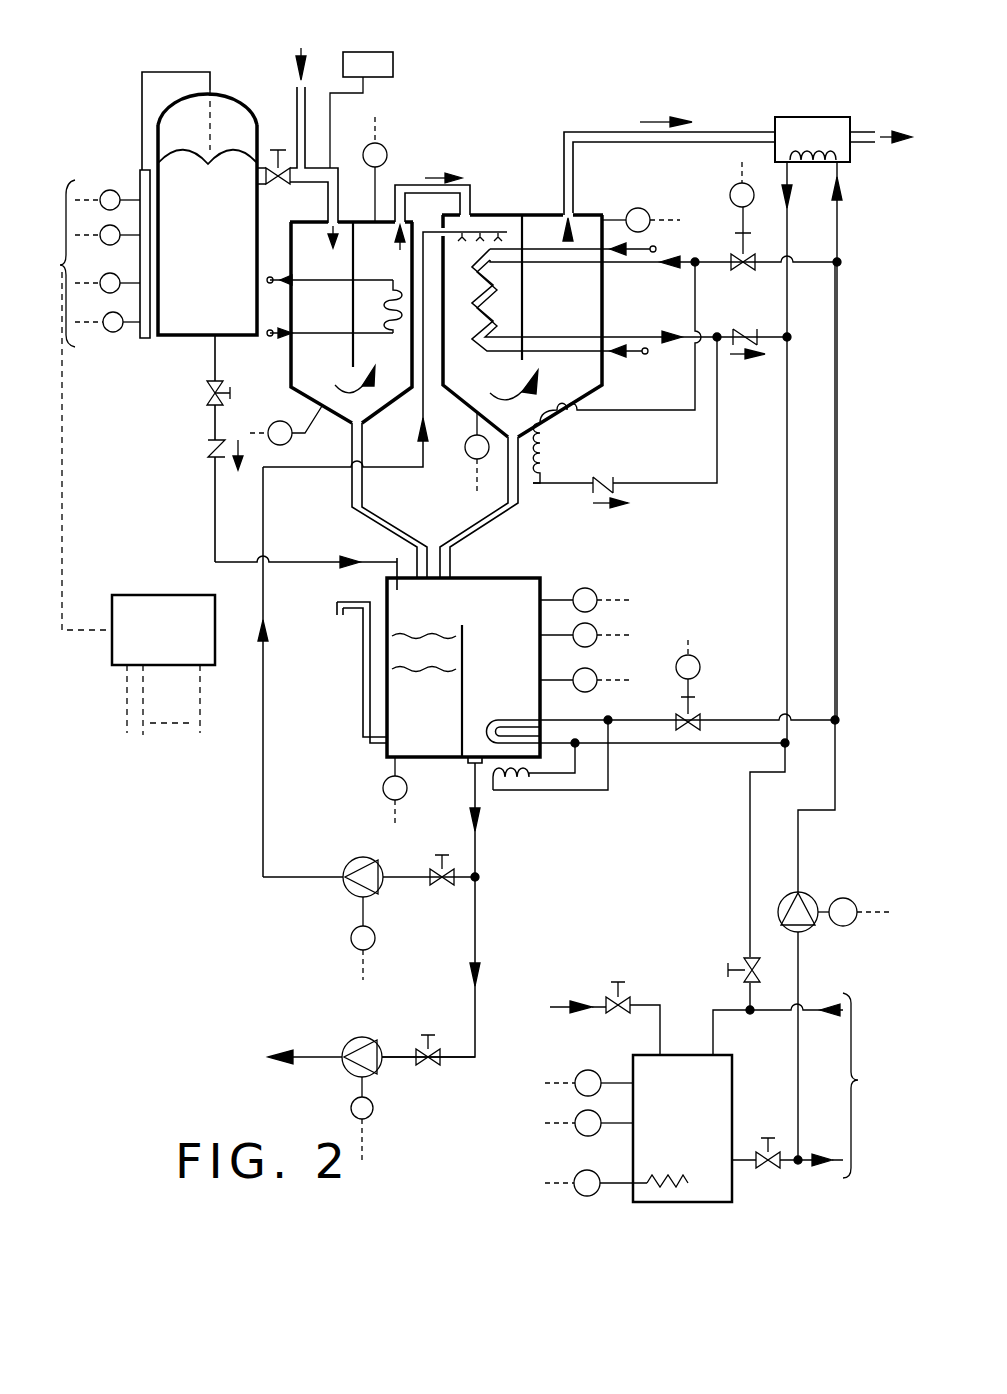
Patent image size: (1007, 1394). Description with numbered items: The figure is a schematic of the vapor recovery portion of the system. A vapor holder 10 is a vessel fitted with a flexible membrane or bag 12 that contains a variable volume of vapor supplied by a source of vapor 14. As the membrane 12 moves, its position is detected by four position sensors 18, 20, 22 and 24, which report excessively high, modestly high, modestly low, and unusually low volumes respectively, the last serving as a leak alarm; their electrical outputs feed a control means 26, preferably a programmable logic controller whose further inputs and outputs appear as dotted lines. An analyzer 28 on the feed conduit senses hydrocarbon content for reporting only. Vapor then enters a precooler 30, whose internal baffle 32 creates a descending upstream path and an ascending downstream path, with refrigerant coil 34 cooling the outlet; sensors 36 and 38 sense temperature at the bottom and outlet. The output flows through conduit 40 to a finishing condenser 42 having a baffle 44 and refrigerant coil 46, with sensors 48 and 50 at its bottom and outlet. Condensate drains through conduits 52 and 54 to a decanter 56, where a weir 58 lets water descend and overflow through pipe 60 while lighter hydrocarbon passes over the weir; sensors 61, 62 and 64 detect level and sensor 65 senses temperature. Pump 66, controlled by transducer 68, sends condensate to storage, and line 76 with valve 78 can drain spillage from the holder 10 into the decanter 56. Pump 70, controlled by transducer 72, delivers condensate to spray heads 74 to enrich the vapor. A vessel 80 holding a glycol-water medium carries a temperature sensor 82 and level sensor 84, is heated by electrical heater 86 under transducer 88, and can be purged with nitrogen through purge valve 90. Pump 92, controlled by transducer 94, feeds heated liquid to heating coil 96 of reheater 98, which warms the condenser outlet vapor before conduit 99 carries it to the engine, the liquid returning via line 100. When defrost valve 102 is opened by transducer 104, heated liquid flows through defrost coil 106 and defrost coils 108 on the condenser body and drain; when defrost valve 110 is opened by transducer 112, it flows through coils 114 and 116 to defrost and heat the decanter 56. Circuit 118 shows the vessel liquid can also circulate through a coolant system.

The vapor holder 10 is at (244, 338).
The flexible membrane or bag 12 is at (227, 150).
The source of vapor 14 is at (302, 50).
The position sensor 18 is at (112, 190).
The position sensor 20 is at (102, 222).
The position sensor 22 is at (110, 274).
The position sensor 24 is at (108, 332).
The control means 26 is at (168, 595).
The analyzer 28 is at (394, 55).
The precooler 30 is at (300, 396).
The internal baffle 32 is at (353, 294).
The coil 34 is at (394, 334).
The sensor 36 is at (290, 445).
The sensor 38 is at (387, 152).
The conduit 40 is at (480, 185).
The finishing condenser 42 is at (610, 357).
The baffle 44 is at (530, 288).
The coil 46 is at (488, 350).
The sensor 48 is at (468, 456).
The sensor 50 is at (656, 192).
The conduit 52 is at (366, 520).
The conduit 54 is at (480, 530).
The decanter 56 is at (430, 757).
The weir 58 is at (466, 668).
The pipe 60 is at (370, 704).
The sensor 61 is at (590, 588).
The sensor 62 is at (594, 628).
The sensor 64 is at (592, 674).
The sensor 65 is at (383, 788).
The pump 66 is at (358, 1037).
The transducer 68 is at (374, 1110).
The pump 70 is at (360, 858).
The transducer 72 is at (376, 938).
The spray heads 74 is at (555, 215).
The line 76 is at (280, 562).
The valve 78 is at (207, 393).
The vessel 80 is at (728, 1202).
The temperature sensor 82 is at (594, 1071).
The level sensor 84 is at (580, 1136).
The electrical heater 86 is at (662, 1190).
The transducer 88 is at (576, 1194).
The purge valve 90 is at (624, 1000).
The pump 92 is at (812, 930).
The transducer 94 is at (852, 900).
The heating coil 96 is at (822, 148).
The reheater 98 is at (792, 117).
The conduit 99 is at (866, 143).
The line 100 is at (748, 918).
The defrost valve 102 is at (738, 276).
The transducer 104 is at (731, 188).
The defrost coil 106 is at (485, 322).
The defrost coils 108 is at (553, 438).
The defrost valve 110 is at (690, 730).
The transducer 112 is at (701, 668).
The coil 114 is at (488, 726).
The coil 116 is at (512, 790).
The circuit 118 is at (873, 1085).